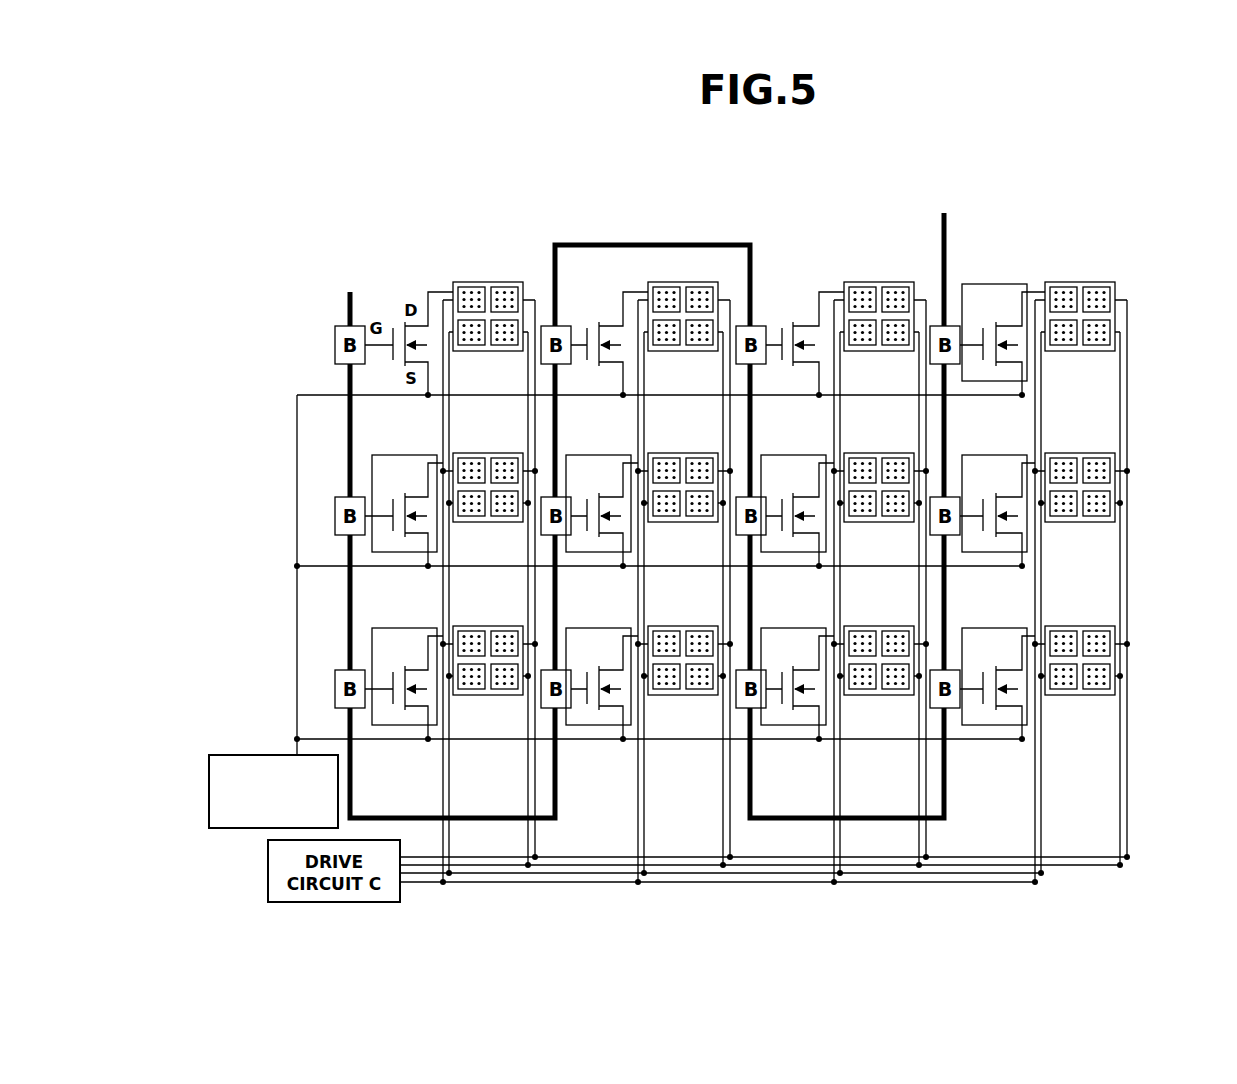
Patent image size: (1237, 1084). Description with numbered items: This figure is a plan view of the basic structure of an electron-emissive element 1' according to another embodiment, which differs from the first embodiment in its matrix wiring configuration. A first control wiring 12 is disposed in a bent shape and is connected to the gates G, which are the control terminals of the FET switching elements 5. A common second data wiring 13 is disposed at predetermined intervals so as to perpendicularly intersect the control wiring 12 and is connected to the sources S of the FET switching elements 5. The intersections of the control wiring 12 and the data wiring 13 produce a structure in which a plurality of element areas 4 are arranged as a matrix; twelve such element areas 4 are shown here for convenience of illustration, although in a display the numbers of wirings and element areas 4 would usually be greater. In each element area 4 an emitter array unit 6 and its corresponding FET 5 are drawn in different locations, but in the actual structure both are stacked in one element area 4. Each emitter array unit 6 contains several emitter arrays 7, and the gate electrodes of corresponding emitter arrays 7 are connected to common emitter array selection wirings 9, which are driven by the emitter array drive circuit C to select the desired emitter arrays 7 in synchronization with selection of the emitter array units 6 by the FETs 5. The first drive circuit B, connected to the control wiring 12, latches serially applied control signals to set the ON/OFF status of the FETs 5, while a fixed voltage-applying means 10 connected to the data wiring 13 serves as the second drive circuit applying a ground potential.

The electron-emissive element 1' is at (1043, 268).
The element area 4 is at (785, 452).
The FET switching element 5 is at (700, 485).
The emitter array unit 6 is at (827, 435).
The emitter array 7 is at (1102, 490).
The emitter array selection wiring 9 is at (765, 892).
The fixed voltage-applying means 10 is at (233, 755).
The first control wiring 12 is at (347, 300).
The second data wiring 13 is at (297, 476).